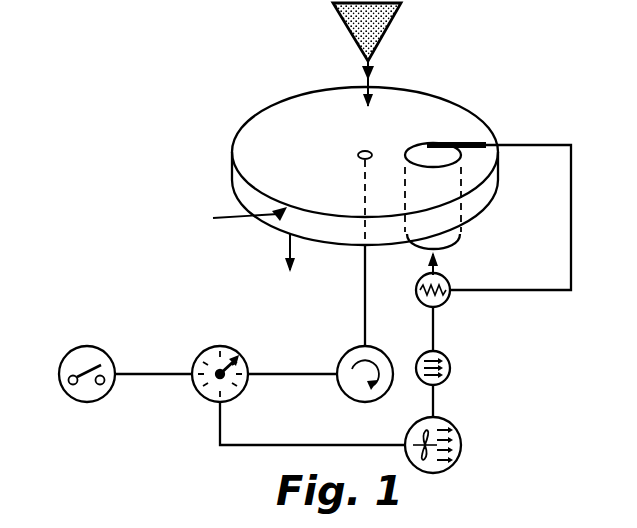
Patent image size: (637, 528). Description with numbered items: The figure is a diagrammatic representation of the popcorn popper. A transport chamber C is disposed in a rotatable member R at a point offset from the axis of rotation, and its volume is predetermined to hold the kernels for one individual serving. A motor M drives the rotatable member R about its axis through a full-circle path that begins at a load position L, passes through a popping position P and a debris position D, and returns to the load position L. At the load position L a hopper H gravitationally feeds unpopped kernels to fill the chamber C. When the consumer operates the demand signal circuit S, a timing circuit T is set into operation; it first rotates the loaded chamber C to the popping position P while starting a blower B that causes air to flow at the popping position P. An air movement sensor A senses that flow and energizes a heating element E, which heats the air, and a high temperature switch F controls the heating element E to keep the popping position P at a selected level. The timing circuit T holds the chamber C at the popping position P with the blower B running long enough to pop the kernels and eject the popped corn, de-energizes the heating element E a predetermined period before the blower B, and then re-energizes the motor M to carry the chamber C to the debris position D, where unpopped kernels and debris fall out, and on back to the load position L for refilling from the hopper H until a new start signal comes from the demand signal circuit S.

The hopper H is at (347, 28).
The load position L is at (374, 75).
The rotatable member R is at (248, 128).
The transport chamber C is at (421, 147).
The high temperature switch F is at (447, 144).
The popping position P is at (508, 155).
The debris position D is at (245, 239).
The heating element E is at (441, 278).
The demand signal circuit S is at (69, 356).
The timing circuit T is at (205, 352).
The motor M is at (345, 353).
The air movement sensor A is at (452, 365).
The blower B is at (462, 444).